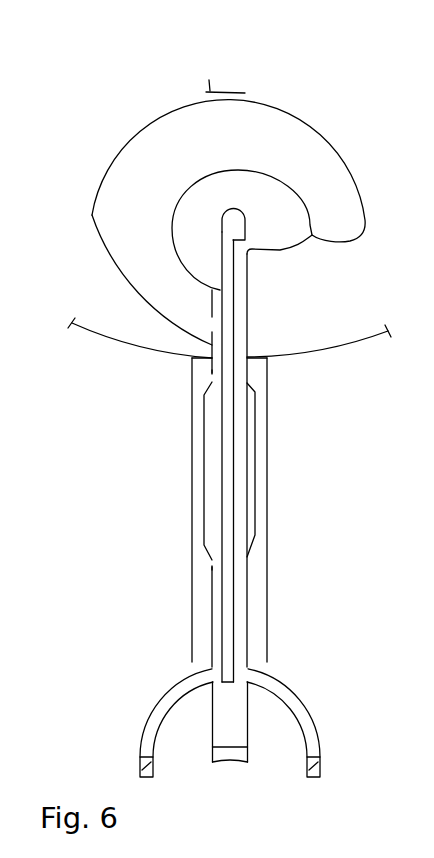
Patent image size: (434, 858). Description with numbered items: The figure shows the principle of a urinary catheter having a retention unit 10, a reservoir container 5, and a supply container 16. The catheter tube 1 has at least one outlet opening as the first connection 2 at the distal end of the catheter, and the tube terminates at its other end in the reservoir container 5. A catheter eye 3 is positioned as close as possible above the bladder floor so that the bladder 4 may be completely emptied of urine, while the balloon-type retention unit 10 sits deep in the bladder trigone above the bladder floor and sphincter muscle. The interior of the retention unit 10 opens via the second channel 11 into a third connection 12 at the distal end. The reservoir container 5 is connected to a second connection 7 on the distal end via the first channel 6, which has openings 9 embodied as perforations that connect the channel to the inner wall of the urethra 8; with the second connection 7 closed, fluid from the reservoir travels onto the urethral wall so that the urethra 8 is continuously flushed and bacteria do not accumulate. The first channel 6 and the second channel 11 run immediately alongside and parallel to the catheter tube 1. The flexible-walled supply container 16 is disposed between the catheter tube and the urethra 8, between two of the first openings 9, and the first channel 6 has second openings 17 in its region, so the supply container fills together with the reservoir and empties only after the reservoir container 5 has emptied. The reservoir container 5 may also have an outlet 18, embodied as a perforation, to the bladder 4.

The catheter tube 1 is at (233, 717).
The first connection 2 is at (230, 755).
The catheter eye 3 is at (247, 343).
The bladder 4 is at (336, 288).
The reservoir container 5 is at (143, 195).
The first channel 6 is at (220, 475).
The second connection 7 is at (140, 762).
The urethra 8 is at (268, 635).
The openings 9 is at (210, 373).
The retention unit 10 is at (283, 237).
The second channel 11 is at (240, 570).
The third connection 12 is at (320, 762).
The supply container 16 is at (253, 477).
The second openings 17 is at (208, 391).
The outlet 18 is at (243, 92).